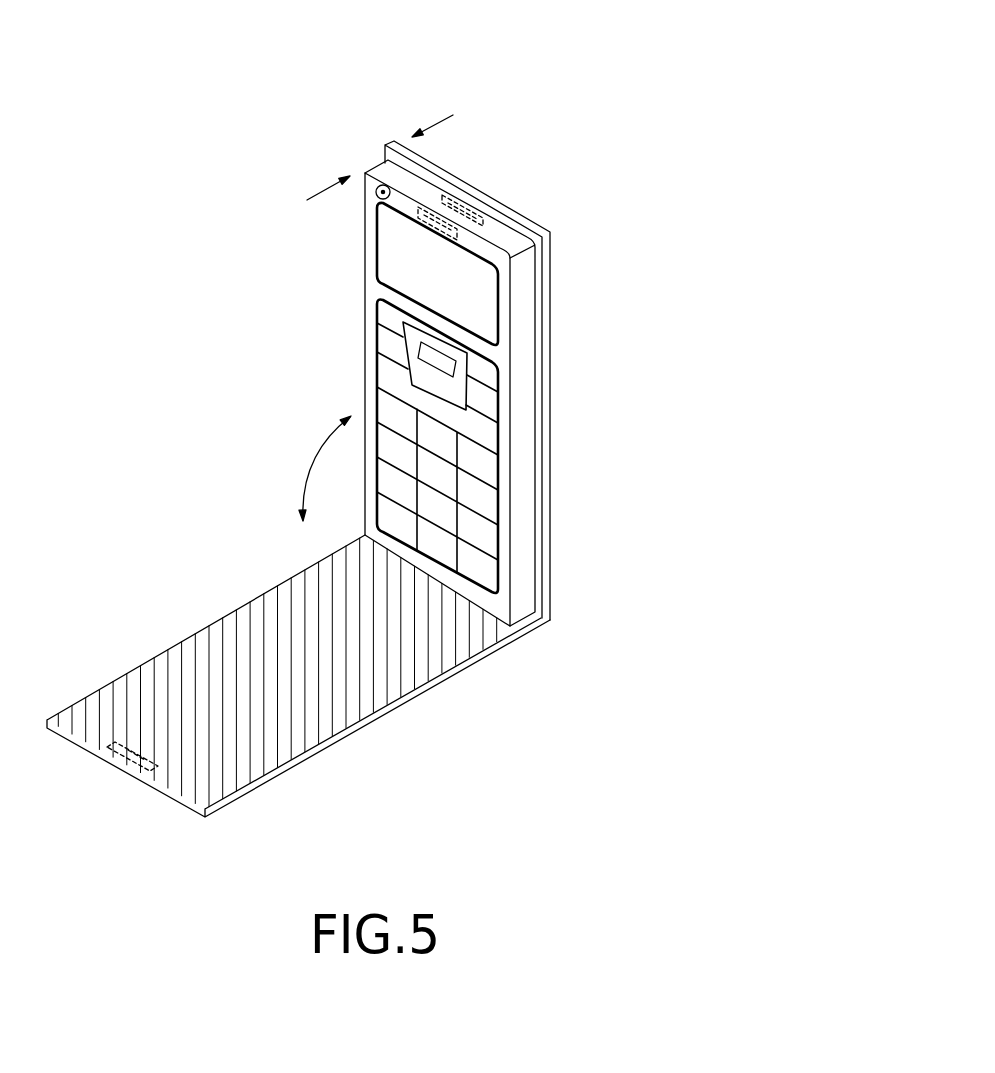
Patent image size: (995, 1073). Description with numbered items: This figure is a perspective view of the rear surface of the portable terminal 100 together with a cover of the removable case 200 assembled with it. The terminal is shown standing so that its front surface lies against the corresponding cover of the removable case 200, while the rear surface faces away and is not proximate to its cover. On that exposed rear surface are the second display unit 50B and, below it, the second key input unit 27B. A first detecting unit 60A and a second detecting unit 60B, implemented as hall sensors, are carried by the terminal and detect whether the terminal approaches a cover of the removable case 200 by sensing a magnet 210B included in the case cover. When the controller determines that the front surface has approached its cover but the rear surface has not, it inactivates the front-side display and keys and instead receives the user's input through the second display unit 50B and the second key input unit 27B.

The portable terminal 100 is at (353, 152).
The removable case 200 is at (518, 152).
The first detecting unit 60A is at (463, 207).
The second detecting unit 60B is at (445, 228).
The second display unit 50B is at (502, 312).
The second key input unit 27B is at (502, 512).
The magnet 210B is at (125, 766).